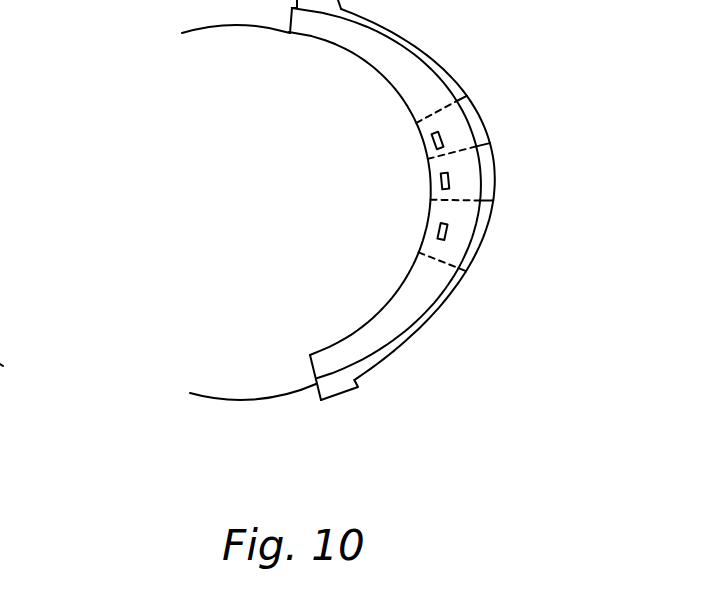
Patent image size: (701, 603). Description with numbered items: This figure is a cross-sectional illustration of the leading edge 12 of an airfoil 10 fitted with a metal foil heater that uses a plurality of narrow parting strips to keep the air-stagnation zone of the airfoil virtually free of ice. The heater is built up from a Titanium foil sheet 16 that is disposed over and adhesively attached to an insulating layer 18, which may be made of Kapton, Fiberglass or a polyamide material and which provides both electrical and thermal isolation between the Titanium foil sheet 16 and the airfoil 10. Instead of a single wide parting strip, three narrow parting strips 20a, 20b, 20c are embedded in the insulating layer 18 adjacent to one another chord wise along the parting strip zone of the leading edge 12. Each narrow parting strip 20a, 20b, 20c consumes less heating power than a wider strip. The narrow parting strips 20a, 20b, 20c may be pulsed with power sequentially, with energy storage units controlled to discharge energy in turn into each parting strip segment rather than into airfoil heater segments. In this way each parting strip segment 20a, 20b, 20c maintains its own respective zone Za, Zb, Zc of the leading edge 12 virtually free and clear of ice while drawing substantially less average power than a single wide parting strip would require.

The airfoil 10 is at (158, 212).
The leading edge 12 is at (563, 178).
The Titanium foil sheet 16 is at (315, 395).
The insulating layer 18 is at (320, 366).
The narrow parting strip 20a is at (432, 141).
The narrow parting strip 20b is at (441, 180).
The narrow parting strip 20c is at (437, 233).
The zone Za is at (477, 120).
The zone Zb is at (490, 178).
The zone Zc is at (486, 236).